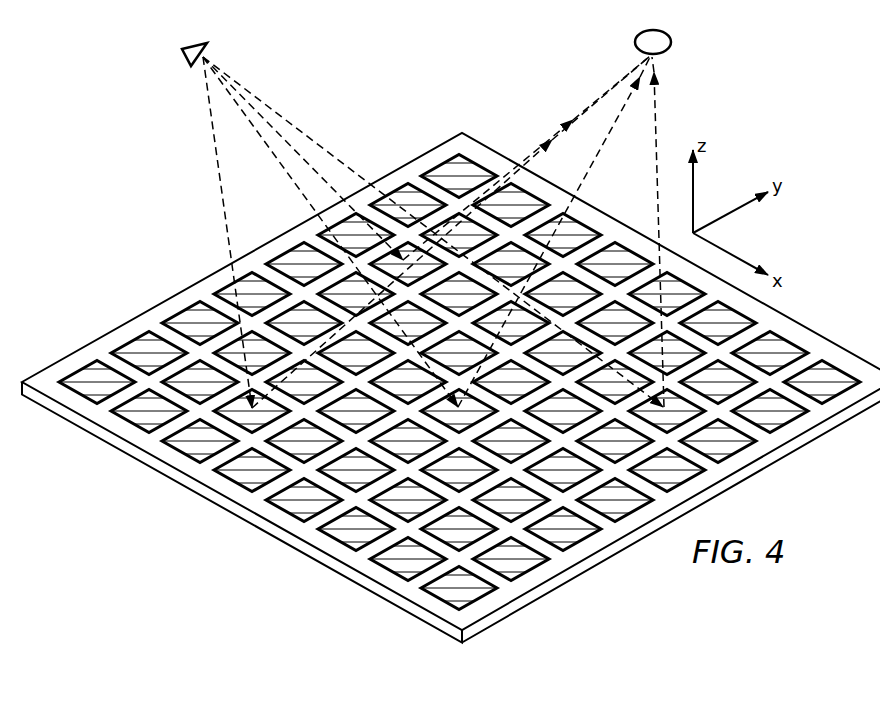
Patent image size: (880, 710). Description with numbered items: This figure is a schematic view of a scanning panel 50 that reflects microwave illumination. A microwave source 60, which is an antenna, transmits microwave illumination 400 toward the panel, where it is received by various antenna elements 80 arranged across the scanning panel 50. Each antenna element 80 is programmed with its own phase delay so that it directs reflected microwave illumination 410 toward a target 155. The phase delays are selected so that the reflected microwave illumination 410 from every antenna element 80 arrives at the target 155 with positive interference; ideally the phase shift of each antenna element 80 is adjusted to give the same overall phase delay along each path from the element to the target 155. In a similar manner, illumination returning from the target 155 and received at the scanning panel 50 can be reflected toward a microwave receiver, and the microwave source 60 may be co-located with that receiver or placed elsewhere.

The scanning panel 50 is at (283, 530).
The antenna element 80 is at (490, 598).
The microwave source 60 is at (180, 52).
The target 155 is at (672, 42).
The microwave illumination 400 is at (219, 172).
The reflected microwave illumination 410 is at (541, 152).